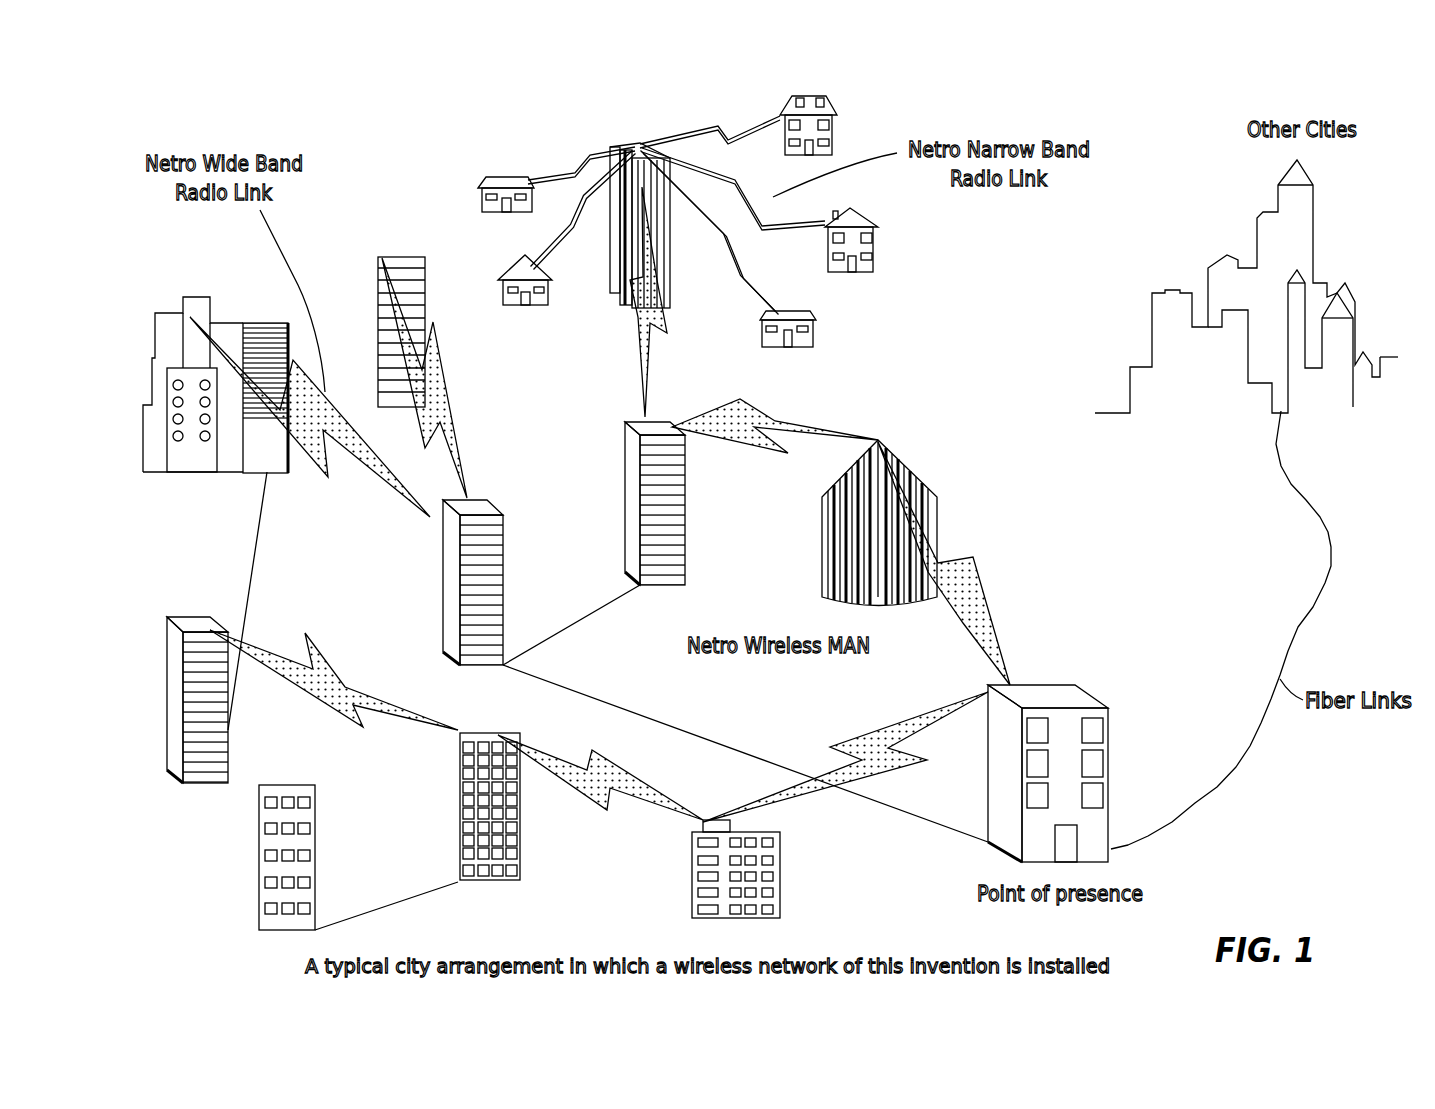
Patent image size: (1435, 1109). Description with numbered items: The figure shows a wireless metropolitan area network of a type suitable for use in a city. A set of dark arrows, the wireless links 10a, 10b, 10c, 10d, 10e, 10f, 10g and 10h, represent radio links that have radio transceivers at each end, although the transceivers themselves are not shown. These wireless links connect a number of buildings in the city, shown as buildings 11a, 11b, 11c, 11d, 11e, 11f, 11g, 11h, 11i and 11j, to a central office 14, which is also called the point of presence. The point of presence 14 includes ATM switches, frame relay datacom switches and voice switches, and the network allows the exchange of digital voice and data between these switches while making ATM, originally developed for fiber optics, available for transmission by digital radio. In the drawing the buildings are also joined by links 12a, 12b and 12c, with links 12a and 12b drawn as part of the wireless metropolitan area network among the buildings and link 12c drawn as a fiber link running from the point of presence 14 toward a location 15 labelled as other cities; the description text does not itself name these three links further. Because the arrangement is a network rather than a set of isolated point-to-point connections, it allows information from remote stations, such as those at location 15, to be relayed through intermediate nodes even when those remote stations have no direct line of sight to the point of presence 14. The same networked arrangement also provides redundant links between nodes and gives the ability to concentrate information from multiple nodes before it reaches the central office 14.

The wireless link 10a is at (328, 478).
The wireless link 10b is at (445, 388).
The wireless link 10c is at (635, 348).
The wireless link 10d is at (800, 415).
The wireless link 10e is at (948, 556).
The wireless link 10f is at (860, 735).
The wireless link 10g is at (613, 766).
The wireless link 10h is at (340, 653).
The building 11a is at (186, 474).
The building 11b is at (407, 255).
The building 11c is at (637, 145).
The building 11d is at (503, 563).
The building 11e is at (687, 517).
The building 11f is at (905, 465).
The building 11g is at (780, 890).
The building 11h is at (520, 845).
The building 11i is at (315, 840).
The building 11j is at (167, 710).
The wireless MAN link 12a is at (663, 722).
The wireless MAN link 12b is at (590, 613).
The fiber link 12c is at (1329, 536).
The point of presence 14 is at (1055, 685).
The remote station location 15 is at (1313, 233).